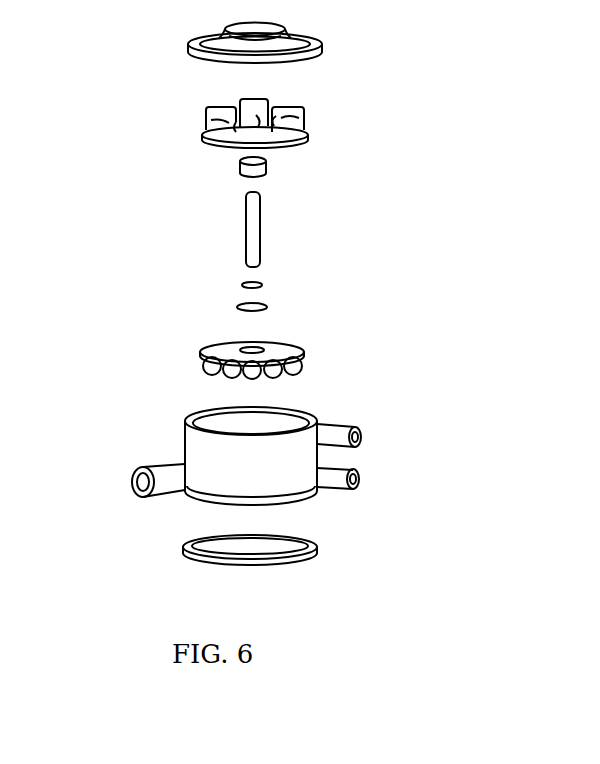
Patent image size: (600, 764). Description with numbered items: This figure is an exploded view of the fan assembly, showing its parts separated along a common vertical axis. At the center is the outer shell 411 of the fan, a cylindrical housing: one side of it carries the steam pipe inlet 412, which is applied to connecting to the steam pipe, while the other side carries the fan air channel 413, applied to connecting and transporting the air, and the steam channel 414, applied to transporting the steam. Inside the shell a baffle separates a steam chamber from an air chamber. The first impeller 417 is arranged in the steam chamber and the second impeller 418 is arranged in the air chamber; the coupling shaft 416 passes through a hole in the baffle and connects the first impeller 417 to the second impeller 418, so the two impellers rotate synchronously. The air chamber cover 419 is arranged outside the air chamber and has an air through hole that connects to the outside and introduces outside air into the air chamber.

The outer shell of the fan 411 is at (308, 437).
The steam pipe inlet 412 is at (167, 475).
The fan air channel 413 is at (362, 432).
The steam channel 414 is at (355, 488).
The coupling shaft 416 is at (252, 243).
The first impeller 417 is at (282, 353).
The second impeller 418 is at (308, 112).
The air chamber cover 419 is at (308, 45).